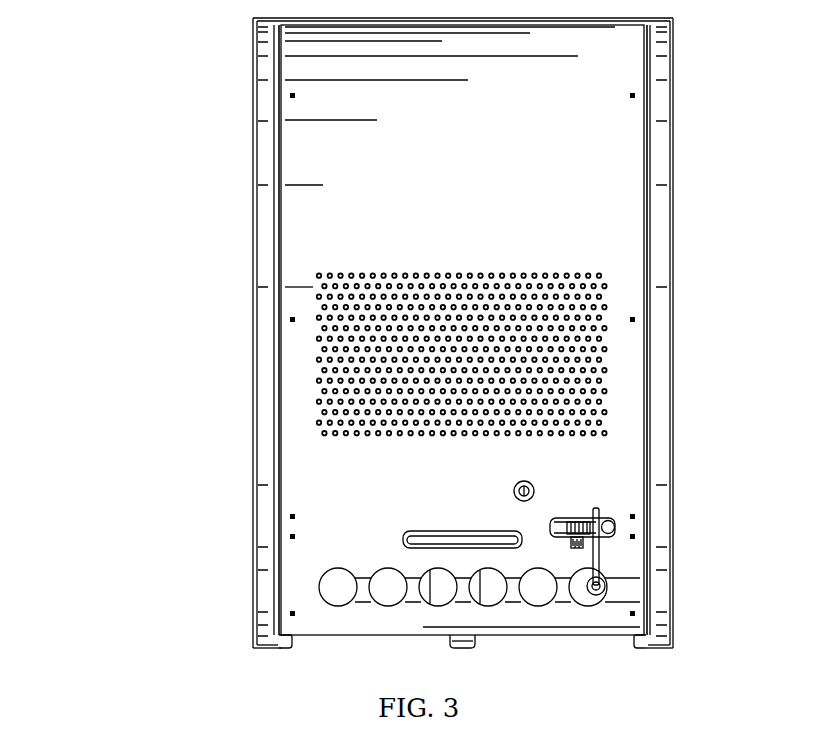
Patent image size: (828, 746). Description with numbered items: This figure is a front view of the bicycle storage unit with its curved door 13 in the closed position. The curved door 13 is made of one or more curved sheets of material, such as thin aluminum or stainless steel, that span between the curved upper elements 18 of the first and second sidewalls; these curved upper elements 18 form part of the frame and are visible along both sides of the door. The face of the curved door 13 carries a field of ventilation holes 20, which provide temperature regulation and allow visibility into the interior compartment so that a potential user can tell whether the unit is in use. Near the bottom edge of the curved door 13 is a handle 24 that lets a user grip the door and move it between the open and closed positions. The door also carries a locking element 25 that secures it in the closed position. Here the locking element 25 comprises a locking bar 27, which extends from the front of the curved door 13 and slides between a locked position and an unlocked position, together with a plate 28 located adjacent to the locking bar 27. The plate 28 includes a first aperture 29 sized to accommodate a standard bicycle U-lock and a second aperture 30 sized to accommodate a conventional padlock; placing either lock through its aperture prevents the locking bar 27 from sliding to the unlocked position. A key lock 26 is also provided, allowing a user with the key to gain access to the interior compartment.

The curved door 13 is at (516, 95).
The curved upper element 18 is at (271, 131).
The ventilation holes 20 is at (358, 367).
The handle 24 is at (440, 545).
The locking element 25 is at (609, 501).
The key lock 26 is at (507, 487).
The locking bar 27 is at (617, 526).
The plate 28 is at (583, 548).
The aperture 29 is at (603, 535).
The aperture 30 is at (575, 520).